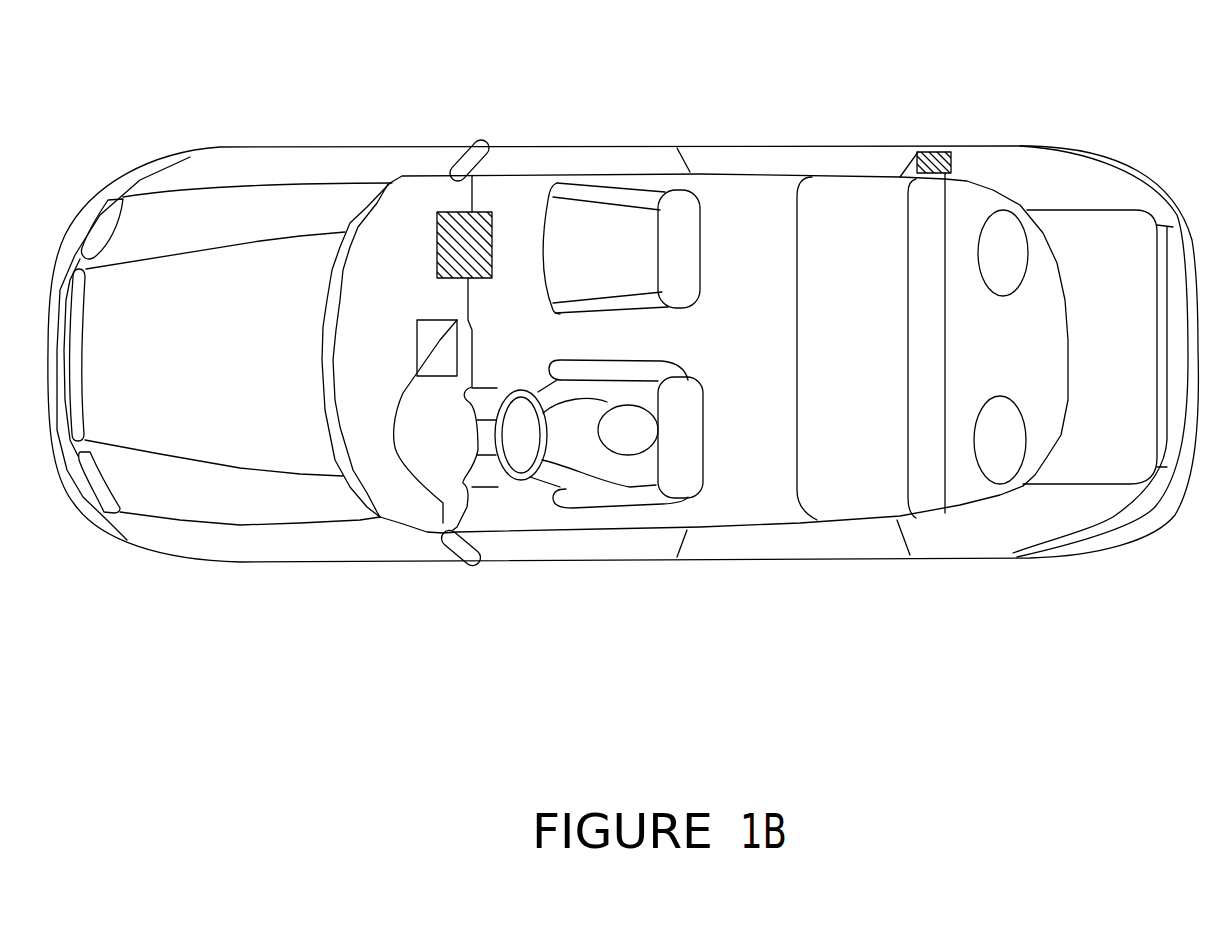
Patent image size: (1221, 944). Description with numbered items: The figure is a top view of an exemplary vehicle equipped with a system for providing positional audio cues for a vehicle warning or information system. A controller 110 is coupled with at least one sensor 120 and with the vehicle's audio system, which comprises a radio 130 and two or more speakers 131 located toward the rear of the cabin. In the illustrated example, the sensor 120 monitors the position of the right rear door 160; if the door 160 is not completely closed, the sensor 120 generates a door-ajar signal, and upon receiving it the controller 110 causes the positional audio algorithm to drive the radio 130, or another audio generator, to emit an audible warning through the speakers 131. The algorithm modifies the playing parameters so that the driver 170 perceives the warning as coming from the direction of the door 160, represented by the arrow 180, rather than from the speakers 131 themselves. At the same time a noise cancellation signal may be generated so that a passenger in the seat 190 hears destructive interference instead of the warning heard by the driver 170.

The controller 110 is at (438, 212).
The sensor 120 is at (952, 152).
The radio 130 is at (417, 332).
The speakers 131 is at (990, 434).
The door 160 is at (755, 160).
The driver 170 is at (580, 457).
The arrow 180 is at (746, 270).
The seat 190 is at (600, 197).